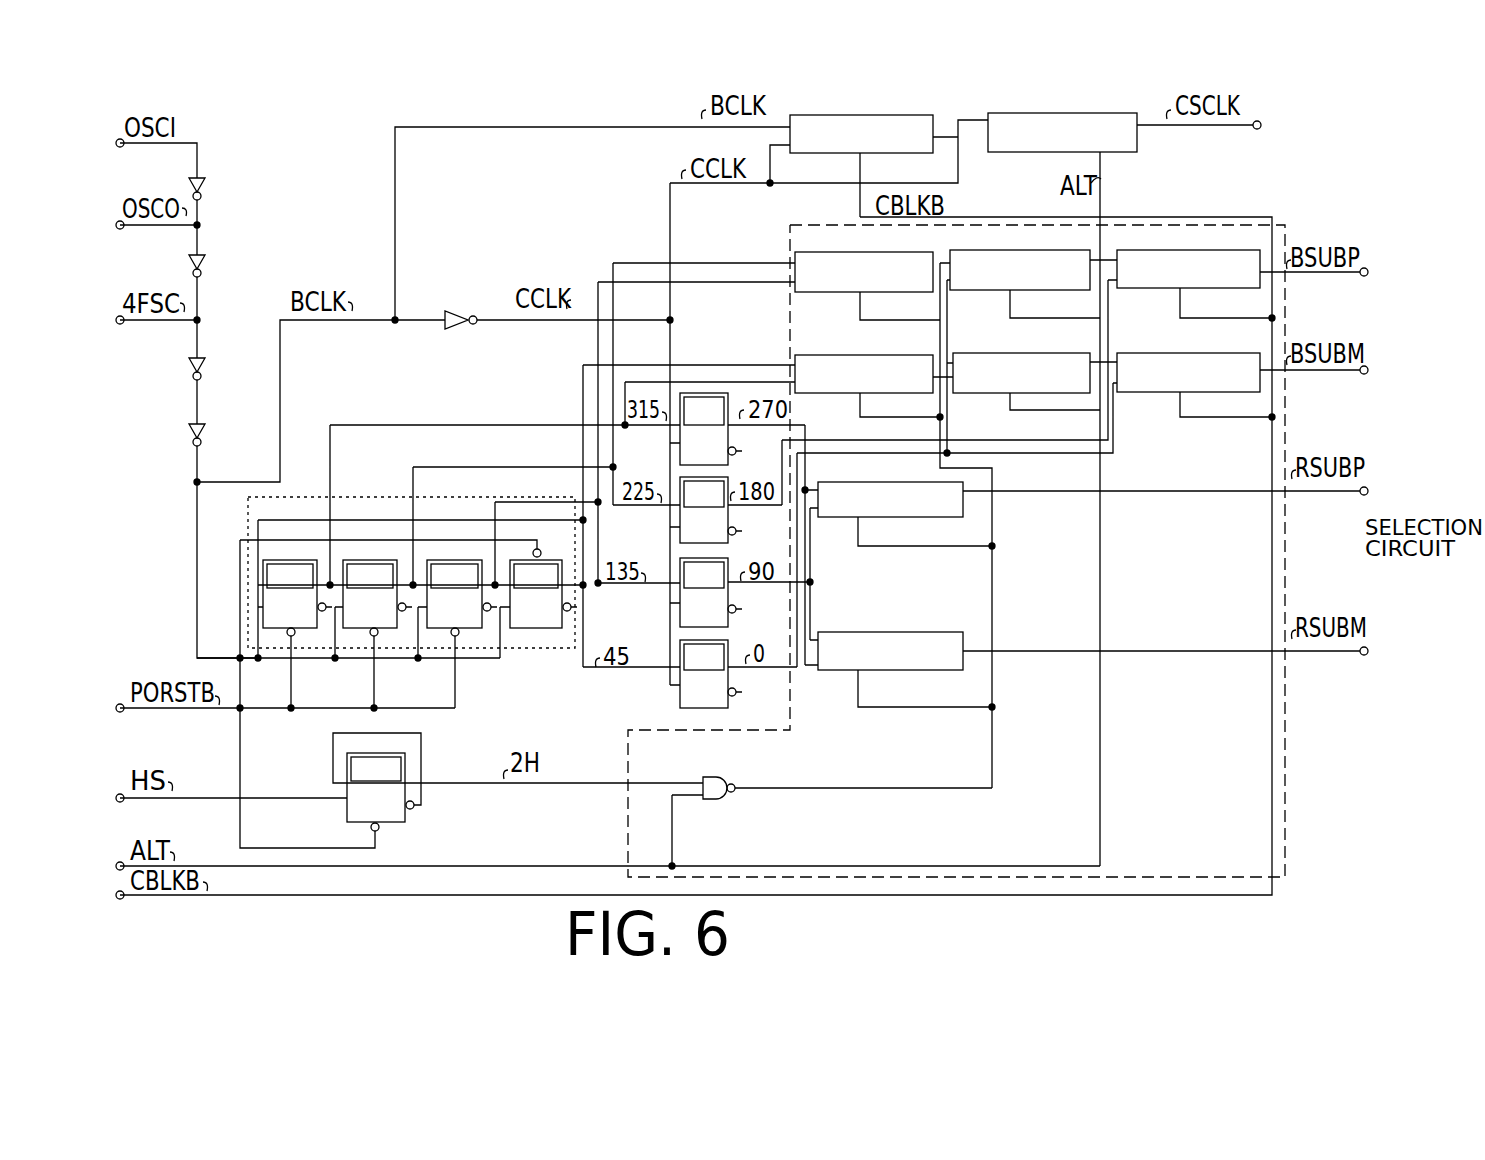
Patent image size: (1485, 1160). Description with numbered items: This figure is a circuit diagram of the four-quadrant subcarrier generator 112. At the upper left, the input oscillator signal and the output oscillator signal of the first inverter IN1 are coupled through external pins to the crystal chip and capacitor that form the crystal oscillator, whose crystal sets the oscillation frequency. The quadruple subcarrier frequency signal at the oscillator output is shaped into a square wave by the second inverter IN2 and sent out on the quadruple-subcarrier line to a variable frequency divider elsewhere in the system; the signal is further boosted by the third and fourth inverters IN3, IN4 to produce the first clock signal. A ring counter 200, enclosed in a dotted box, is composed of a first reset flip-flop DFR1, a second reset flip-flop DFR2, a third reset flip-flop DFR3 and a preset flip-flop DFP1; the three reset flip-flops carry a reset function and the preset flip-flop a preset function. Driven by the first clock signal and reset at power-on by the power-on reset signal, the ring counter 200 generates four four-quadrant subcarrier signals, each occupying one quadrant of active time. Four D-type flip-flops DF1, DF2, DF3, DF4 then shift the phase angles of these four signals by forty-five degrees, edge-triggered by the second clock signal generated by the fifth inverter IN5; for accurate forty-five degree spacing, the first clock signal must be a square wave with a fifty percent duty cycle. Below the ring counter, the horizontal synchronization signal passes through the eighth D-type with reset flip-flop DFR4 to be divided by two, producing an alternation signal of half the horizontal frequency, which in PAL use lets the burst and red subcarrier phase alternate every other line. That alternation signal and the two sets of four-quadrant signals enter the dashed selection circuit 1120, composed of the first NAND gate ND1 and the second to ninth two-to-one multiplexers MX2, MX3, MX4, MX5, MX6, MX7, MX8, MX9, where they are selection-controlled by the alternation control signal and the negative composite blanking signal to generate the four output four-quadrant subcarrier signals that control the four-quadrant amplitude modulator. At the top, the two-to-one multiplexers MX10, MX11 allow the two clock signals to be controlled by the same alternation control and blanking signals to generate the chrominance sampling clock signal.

The first inverter IN1 is at (204, 178).
The second inverter IN2 is at (223, 260).
The third inverter IN3 is at (205, 368).
The fourth inverter IN4 is at (205, 436).
The fifth inverter IN5 is at (460, 300).
The second 2-to-1 multiplexer MX2 is at (886, 623).
The third 2-to-1 multiplexer MX3 is at (884, 477).
The fourth 2-to-1 multiplexer MX4 is at (861, 349).
The fifth 2-to-1 multiplexer MX5 is at (812, 253).
The sixth 2-to-1 multiplexer MX6 is at (1021, 349).
The seventh 2-to-1 multiplexer MX7 is at (972, 253).
The eighth 2-to-1 multiplexer MX8 is at (1186, 349).
The ninth 2-to-1 multiplexer MX9 is at (1176, 247).
The 2-to-1 multiplexer MX10 is at (832, 113).
The 2-to-1 multiplexer MX11 is at (1007, 110).
The D-type flip-flop DF1 is at (567, 429).
The D-type flip-flop DF2 is at (697, 510).
The D-type flip-flop DF3 is at (704, 592).
The D-type flip-flop DF4 is at (690, 674).
The first reset flip-flop DFR1 is at (295, 634).
The second reset flip-flop DFR2 is at (373, 634).
The third reset flip-flop DFR3 is at (457, 634).
The eighth D-type with reset flip-flop DFR4 is at (411, 782).
The preset flip-flop DFP1 is at (538, 603).
The first NAND gate ND1 is at (738, 762).
The ring counter 200 is at (248, 498).
The four-quadrant subcarrier generator 112 is at (1303, 158).
The selection circuit 1120 is at (1278, 582).